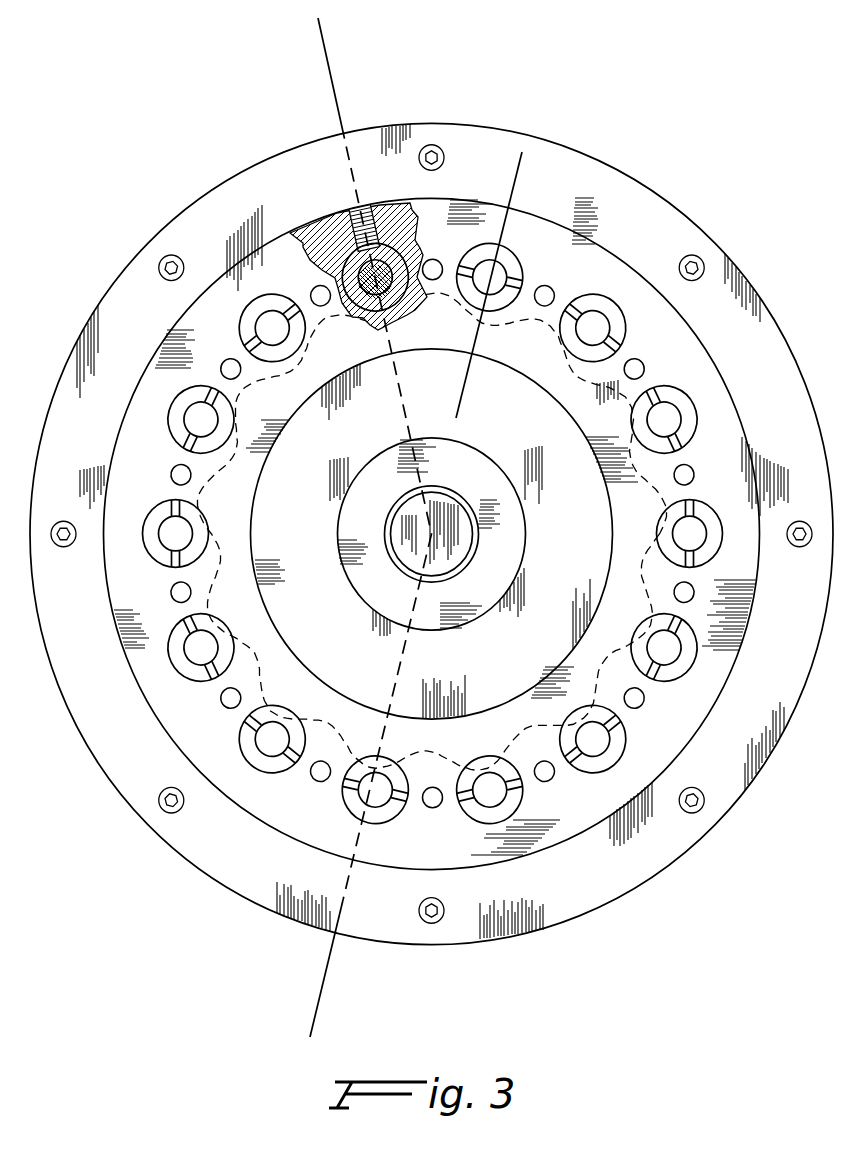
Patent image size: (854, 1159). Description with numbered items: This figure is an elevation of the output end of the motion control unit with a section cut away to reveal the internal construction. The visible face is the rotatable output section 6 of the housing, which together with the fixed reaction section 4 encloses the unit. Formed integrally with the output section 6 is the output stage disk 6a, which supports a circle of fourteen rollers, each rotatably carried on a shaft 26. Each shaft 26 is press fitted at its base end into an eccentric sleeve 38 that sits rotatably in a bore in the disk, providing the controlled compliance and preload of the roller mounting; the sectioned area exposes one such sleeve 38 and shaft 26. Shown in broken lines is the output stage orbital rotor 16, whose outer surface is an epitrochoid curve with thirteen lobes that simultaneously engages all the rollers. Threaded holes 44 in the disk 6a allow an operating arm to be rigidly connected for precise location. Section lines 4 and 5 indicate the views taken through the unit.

The fixed reaction section 4 is at (265, 70).
The section line 5- 5 is at (553, 185).
The rotatable output section 6 is at (272, 160).
The output stage disk 6a is at (282, 499).
The output stage orbital rotor 16 is at (292, 647).
The shaft 26 is at (368, 317).
The eccentric sleeve 38 is at (341, 283).
The threaded holes 44 is at (430, 808).